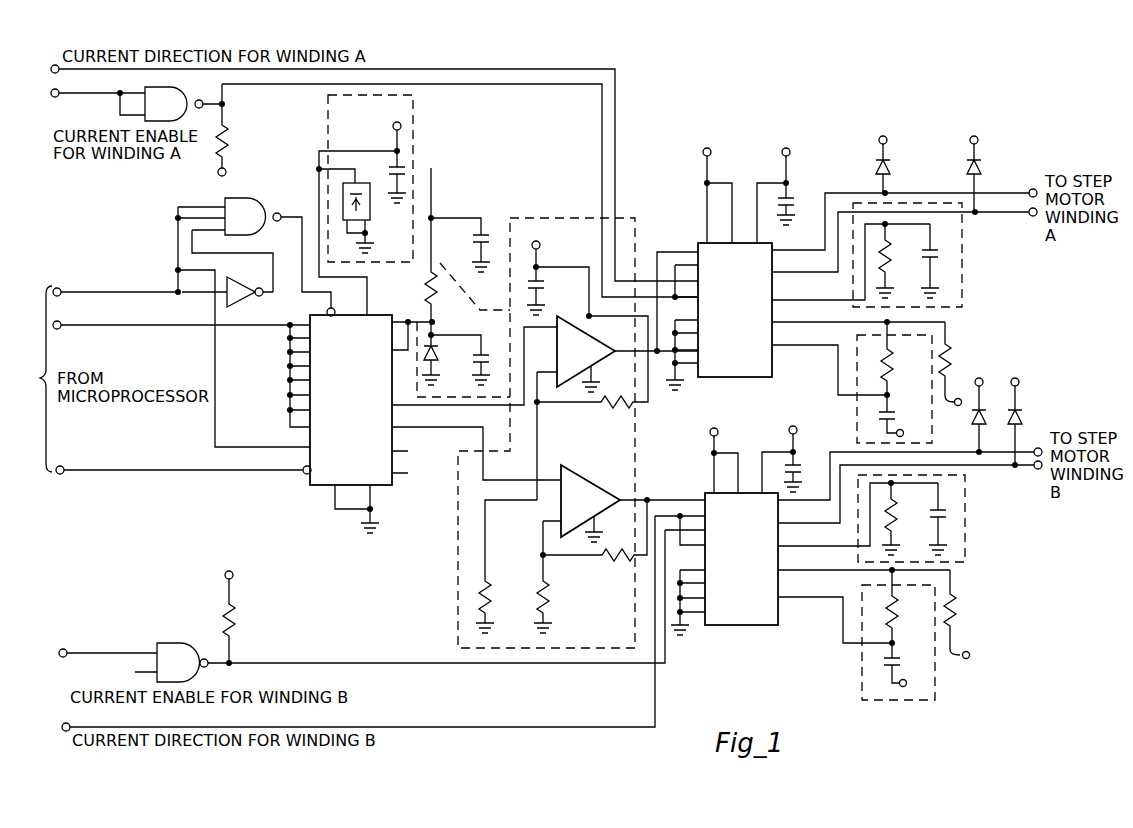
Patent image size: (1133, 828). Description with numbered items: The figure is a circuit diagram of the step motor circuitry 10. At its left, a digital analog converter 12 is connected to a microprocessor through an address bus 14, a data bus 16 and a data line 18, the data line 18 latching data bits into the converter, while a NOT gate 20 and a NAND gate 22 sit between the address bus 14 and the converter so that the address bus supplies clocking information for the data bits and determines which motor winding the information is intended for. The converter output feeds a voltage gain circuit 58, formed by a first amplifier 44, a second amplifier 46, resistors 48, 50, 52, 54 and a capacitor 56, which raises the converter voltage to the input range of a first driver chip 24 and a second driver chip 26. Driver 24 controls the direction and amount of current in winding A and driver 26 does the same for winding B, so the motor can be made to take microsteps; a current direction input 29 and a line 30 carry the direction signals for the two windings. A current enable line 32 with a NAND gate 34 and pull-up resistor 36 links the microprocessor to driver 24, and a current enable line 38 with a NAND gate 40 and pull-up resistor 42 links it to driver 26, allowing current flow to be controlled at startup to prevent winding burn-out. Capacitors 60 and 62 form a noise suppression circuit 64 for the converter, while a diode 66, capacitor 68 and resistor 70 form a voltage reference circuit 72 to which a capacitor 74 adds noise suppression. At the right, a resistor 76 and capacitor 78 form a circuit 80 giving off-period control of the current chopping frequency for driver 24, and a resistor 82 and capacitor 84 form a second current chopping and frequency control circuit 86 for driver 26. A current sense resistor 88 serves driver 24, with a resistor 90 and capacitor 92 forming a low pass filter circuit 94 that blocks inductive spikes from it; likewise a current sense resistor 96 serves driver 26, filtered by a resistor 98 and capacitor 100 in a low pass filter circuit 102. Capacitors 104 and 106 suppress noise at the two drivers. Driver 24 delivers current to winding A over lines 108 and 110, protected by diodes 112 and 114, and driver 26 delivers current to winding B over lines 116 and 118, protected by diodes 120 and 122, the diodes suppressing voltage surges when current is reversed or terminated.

The step motor circuitry 10 is at (114, 765).
The digital analog converter 12 is at (355, 450).
The address bus 14 is at (57, 288).
The data bus 16 is at (57, 329).
The data line 18 is at (60, 466).
The NOT gate 20 is at (227, 282).
The NAND gate 22 is at (248, 226).
The first driver chip 24 is at (738, 347).
The second driver chip 26 is at (744, 597).
The current direction input for winding A 29 is at (55, 69).
The line 30 is at (64, 725).
The current enable line 32 is at (55, 97).
The NAND gate 34 is at (169, 113).
The pull-up resistor 36 is at (227, 135).
The current enable line 38 is at (62, 649).
The NAND gate 40 is at (179, 673).
The pull-up resistor 42 is at (234, 623).
The first amplifier 44 is at (580, 360).
The second amplifier 46 is at (584, 510).
The resistor 48 is at (604, 400).
The resistor 50 is at (608, 566).
The resistor 52 is at (490, 603).
The resistor 54 is at (548, 603).
The capacitor 56 is at (544, 284).
The voltage gain circuit 58 is at (458, 597).
The capacitor 60 is at (390, 174).
The capacitor 62 is at (372, 207).
The noise suppression circuit 64 is at (328, 135).
The diode 66 is at (442, 358).
The capacitor 68 is at (486, 353).
The resistor 70 is at (435, 284).
The voltage reference circuit 72 is at (415, 295).
The capacitor 74 is at (482, 241).
The resistor 76 is at (889, 263).
The capacitor 78 is at (937, 254).
The circuit 80 is at (962, 264).
The resistor 82 is at (893, 514).
The capacitor 84 is at (942, 511).
The second current chopping and frequency control circuit 86 is at (966, 509).
The current sense resistor 88 is at (948, 362).
The resistor 90 is at (889, 366).
The capacitor 92 is at (895, 411).
The circuit 94 is at (857, 426).
The current sense resistor 96 is at (958, 623).
The resistor 98 is at (893, 614).
The capacitor 100 is at (897, 660).
The low pass filter circuit 102 is at (862, 676).
The capacitor 104 is at (795, 200).
The capacitor 106 is at (801, 462).
The line 108 is at (1031, 190).
The line 110 is at (1031, 216).
The diode 112 is at (894, 155).
The diode 114 is at (990, 168).
The line 116 is at (1033, 446).
The line 118 is at (1035, 470).
The diode 120 is at (996, 405).
The diode 122 is at (1022, 412).